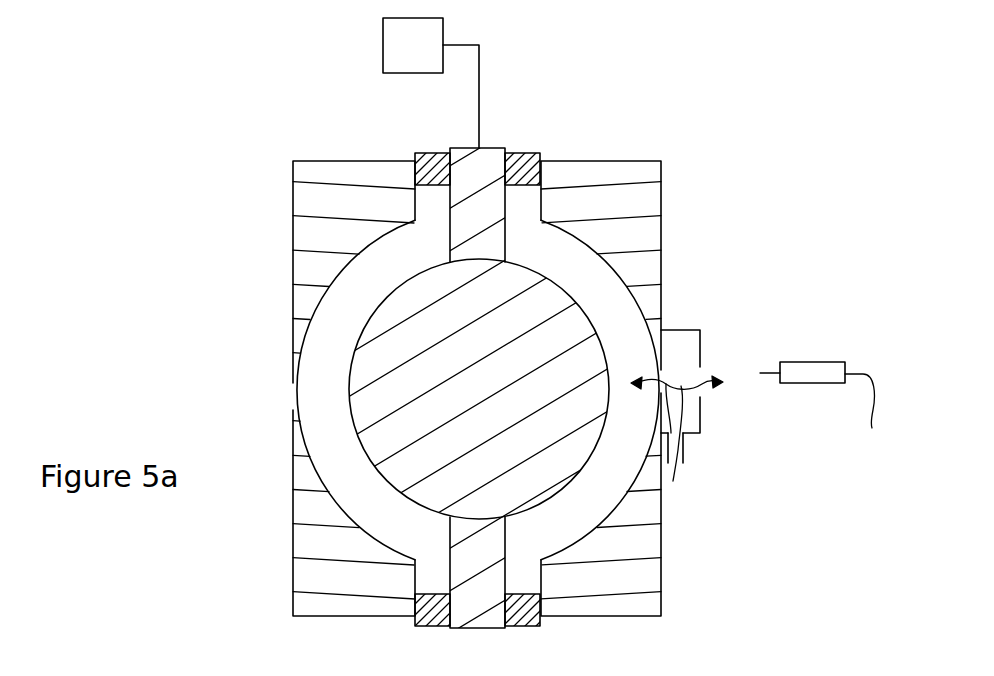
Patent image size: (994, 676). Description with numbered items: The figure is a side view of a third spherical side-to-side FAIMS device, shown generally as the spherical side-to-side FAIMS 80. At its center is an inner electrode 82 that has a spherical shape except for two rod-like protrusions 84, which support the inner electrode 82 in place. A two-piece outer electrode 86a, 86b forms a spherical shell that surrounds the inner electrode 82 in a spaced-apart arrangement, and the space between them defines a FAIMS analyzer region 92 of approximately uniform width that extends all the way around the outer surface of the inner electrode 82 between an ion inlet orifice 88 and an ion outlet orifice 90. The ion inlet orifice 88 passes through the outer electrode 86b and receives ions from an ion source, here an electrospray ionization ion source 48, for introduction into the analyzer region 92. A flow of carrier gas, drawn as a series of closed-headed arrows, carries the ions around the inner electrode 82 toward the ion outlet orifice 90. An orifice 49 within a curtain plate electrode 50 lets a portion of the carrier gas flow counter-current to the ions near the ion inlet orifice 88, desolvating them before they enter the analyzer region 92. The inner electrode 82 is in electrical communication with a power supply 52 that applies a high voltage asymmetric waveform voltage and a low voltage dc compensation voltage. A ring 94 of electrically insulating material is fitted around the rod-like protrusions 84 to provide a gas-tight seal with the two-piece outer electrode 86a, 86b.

The spherical side-to-side FAIMS 80 is at (150, 194).
The inner electrode 82 is at (588, 302).
The rod-like protrusions 84 is at (505, 230).
The outer electrode 86a is at (293, 232).
The outer electrode 86b is at (645, 161).
The ion inlet orifice 88 is at (665, 375).
The ion outlet orifice 90 is at (295, 393).
The FAIMS analyzer region 92 is at (562, 526).
The ring 94 is at (522, 150).
The electrospray ionization ion source 48 is at (812, 362).
The orifice 49 is at (700, 373).
The curtain plate electrode 50 is at (702, 423).
The power supply 52 is at (383, 33).